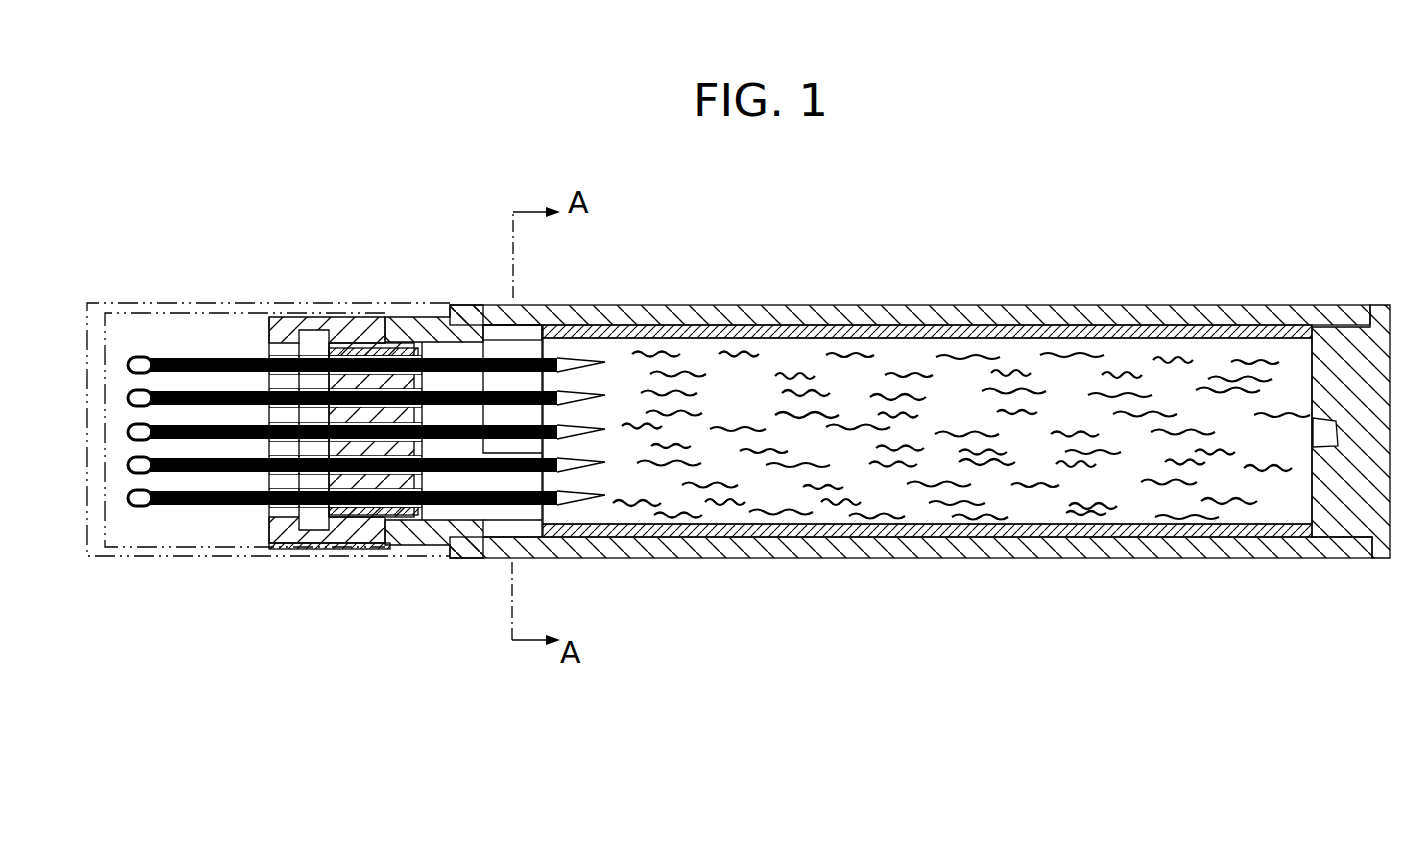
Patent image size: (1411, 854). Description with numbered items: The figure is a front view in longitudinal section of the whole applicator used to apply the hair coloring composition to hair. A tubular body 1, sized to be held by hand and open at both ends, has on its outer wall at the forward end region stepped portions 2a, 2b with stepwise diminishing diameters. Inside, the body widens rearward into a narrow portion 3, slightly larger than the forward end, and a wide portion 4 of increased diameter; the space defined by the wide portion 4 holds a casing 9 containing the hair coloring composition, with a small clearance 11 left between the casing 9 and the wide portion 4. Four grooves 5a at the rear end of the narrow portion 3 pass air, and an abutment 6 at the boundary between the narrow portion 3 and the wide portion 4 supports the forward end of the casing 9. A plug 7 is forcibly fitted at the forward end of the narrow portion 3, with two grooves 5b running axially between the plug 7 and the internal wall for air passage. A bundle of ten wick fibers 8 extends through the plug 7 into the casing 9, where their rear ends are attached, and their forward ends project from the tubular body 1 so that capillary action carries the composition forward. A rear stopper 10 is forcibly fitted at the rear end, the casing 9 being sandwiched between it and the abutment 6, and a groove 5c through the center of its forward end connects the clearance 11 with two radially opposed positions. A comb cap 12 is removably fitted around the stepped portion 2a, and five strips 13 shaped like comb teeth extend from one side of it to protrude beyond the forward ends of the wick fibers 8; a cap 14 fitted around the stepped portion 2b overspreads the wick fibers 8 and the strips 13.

The tubular body 1 is at (912, 312).
The stepped portion 2a is at (308, 318).
The stepped portion 2b is at (424, 306).
The narrow portion 3 is at (461, 349).
The wide portion 4 is at (732, 334).
The grooves 5a is at (518, 328).
The grooves 5b is at (386, 350).
The groove 5c is at (1322, 420).
The abutment 6 is at (540, 328).
The plug 7 is at (345, 345).
The wick fibers 8 is at (190, 357).
The casing 9 is at (840, 365).
The rear stopper 10 is at (1362, 350).
The clearance 11 is at (1020, 332).
The comb cap 12 is at (290, 549).
The strips 13 is at (138, 356).
The cap 14 is at (90, 558).